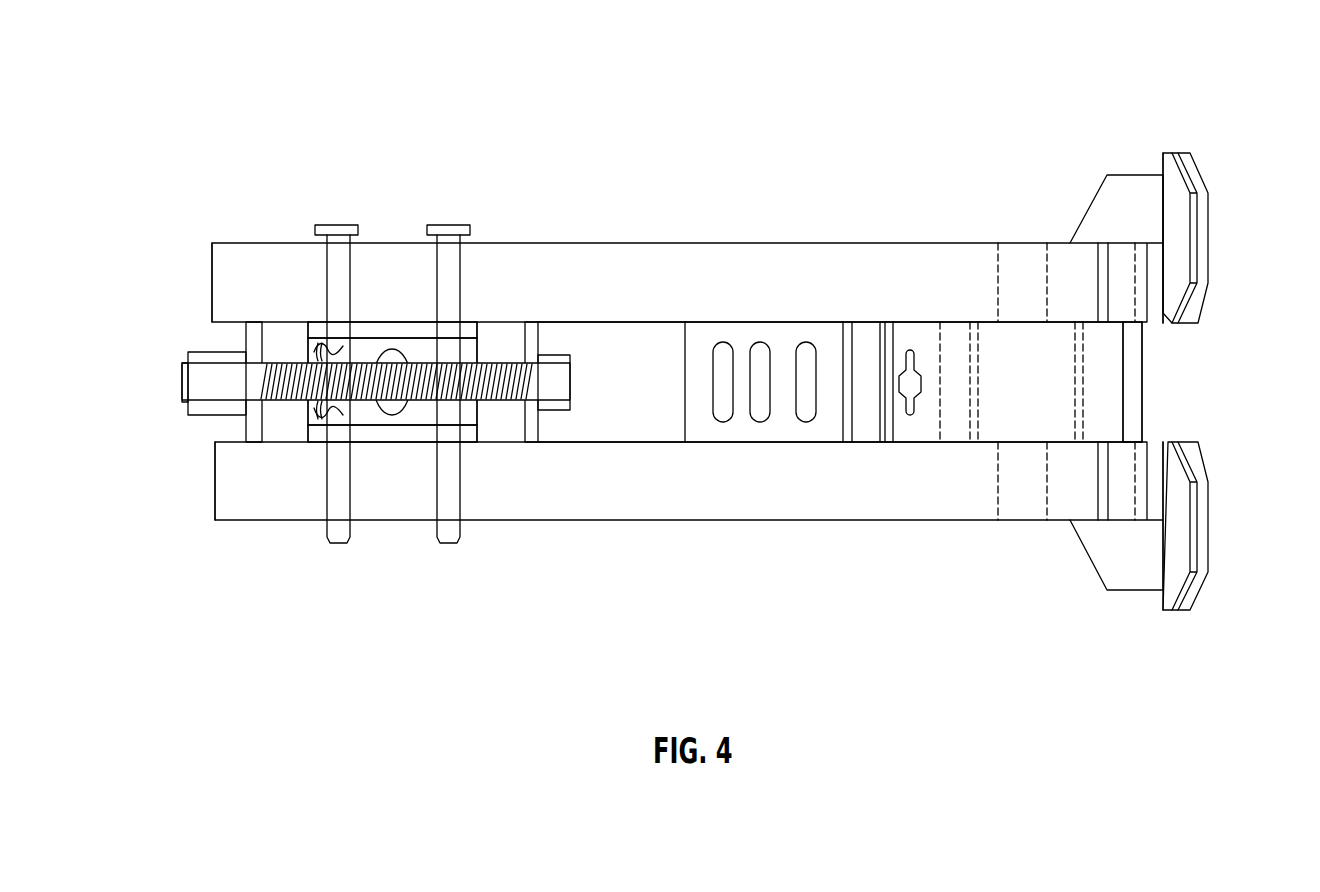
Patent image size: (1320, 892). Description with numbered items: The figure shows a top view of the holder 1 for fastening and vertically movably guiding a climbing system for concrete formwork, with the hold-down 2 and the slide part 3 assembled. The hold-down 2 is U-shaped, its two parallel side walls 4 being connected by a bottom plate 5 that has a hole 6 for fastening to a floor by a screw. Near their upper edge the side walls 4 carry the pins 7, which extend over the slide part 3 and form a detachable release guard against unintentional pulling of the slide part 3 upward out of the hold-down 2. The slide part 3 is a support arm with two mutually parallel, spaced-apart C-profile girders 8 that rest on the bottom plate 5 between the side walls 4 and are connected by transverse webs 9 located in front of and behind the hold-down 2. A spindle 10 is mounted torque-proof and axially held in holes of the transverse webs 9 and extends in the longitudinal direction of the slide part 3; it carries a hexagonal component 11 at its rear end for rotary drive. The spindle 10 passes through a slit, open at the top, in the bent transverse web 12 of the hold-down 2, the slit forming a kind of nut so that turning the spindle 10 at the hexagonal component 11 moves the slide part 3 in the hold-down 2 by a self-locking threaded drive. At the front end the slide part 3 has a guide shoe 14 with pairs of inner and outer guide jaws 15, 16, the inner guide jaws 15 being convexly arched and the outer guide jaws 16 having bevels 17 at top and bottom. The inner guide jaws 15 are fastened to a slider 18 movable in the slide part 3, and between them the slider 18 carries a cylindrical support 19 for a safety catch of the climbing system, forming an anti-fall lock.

The holder 1 is at (178, 283).
The hold-down 2 is at (362, 353).
The slide part 3 is at (713, 283).
The side walls 4 is at (472, 330).
The bottom plate 5 is at (417, 350).
The hole 6 is at (392, 405).
The pins 7 is at (337, 288).
The C-profile girders 8 is at (213, 381).
The transverse webs 9 is at (533, 343).
The spindle 10 is at (497, 403).
The hexagonal component 11 is at (220, 385).
The transverse web 12 is at (323, 445).
The guide shoe 14 is at (1220, 298).
The inner guide jaws 15 is at (1122, 485).
The outer guide jaws 16 is at (1173, 222).
The bevels 17 is at (1185, 526).
The slider 18 is at (1040, 398).
The support 19 is at (1130, 382).